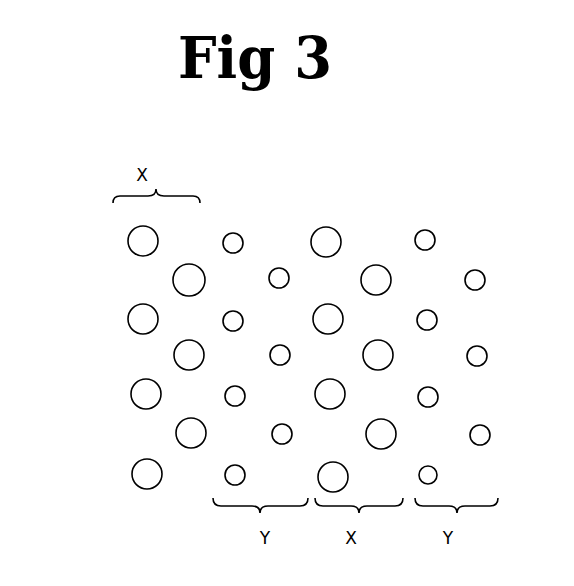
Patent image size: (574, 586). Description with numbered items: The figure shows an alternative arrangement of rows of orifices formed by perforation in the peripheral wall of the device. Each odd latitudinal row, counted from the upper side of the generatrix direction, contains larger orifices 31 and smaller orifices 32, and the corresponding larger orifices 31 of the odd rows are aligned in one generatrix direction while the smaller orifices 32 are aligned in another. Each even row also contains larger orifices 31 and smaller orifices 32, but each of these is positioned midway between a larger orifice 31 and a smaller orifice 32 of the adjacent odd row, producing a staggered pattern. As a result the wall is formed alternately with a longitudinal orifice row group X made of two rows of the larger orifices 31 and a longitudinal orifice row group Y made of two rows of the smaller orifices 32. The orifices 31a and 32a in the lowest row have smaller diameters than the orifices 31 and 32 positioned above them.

The larger orifices 31 is at (128, 240).
The larger orifice at the lower side 31a is at (132, 473).
The smaller orifices 32 is at (239, 236).
The smaller orifice at the lower side 32a is at (227, 477).